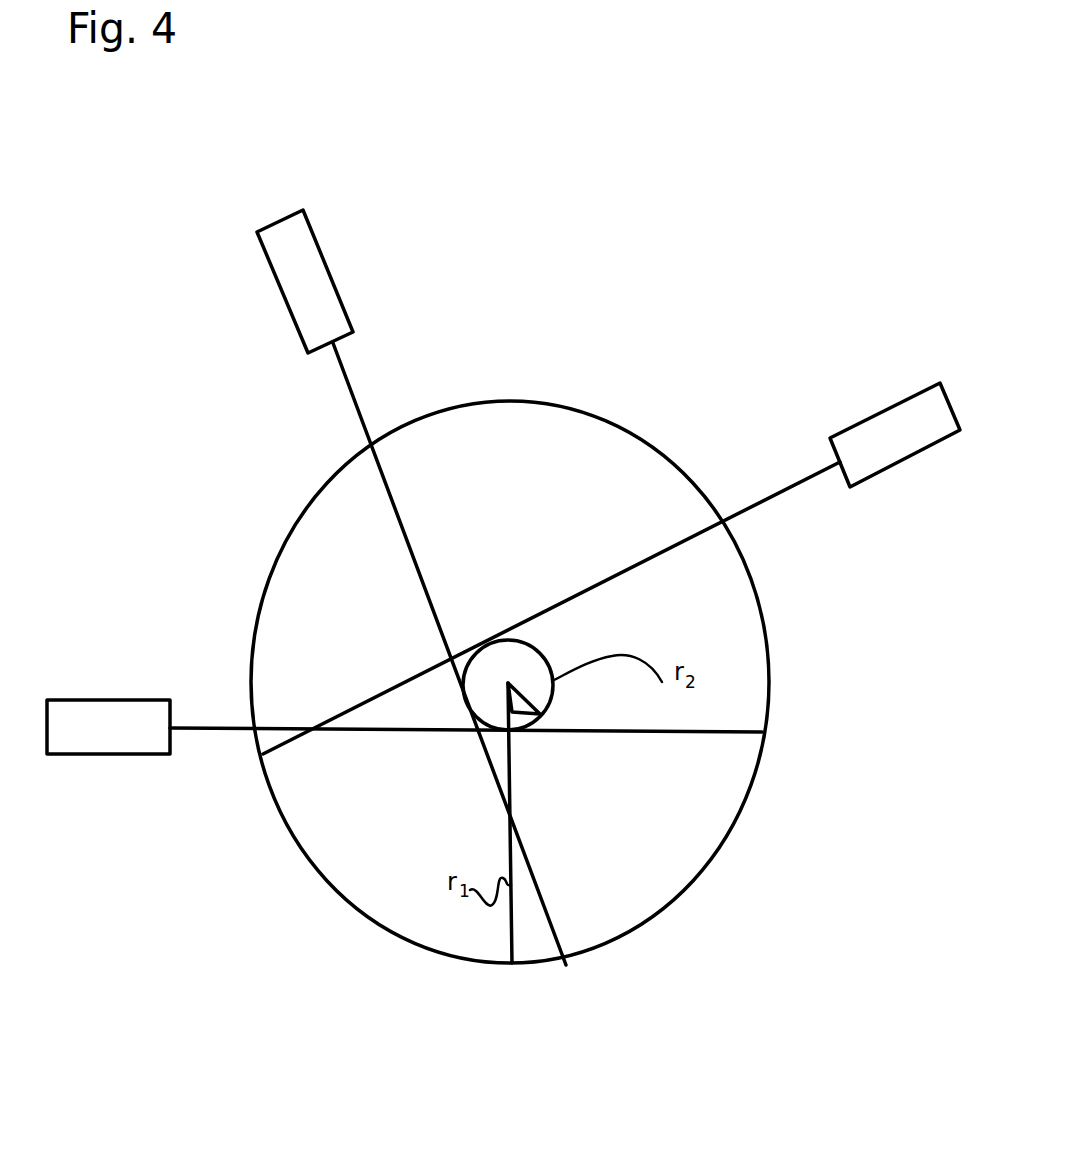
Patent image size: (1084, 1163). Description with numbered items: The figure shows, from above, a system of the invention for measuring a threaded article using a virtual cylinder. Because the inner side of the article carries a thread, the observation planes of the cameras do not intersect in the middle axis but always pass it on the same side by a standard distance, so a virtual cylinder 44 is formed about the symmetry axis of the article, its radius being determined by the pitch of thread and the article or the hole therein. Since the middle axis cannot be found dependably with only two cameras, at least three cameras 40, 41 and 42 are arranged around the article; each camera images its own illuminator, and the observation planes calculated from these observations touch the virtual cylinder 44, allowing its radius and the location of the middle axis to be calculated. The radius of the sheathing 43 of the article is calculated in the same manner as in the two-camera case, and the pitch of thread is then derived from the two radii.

The camera 40 is at (91, 700).
The camera 41 is at (335, 264).
The camera 42 is at (840, 432).
The sheathing 43 is at (330, 890).
The virtual cylinder 44 is at (543, 643).